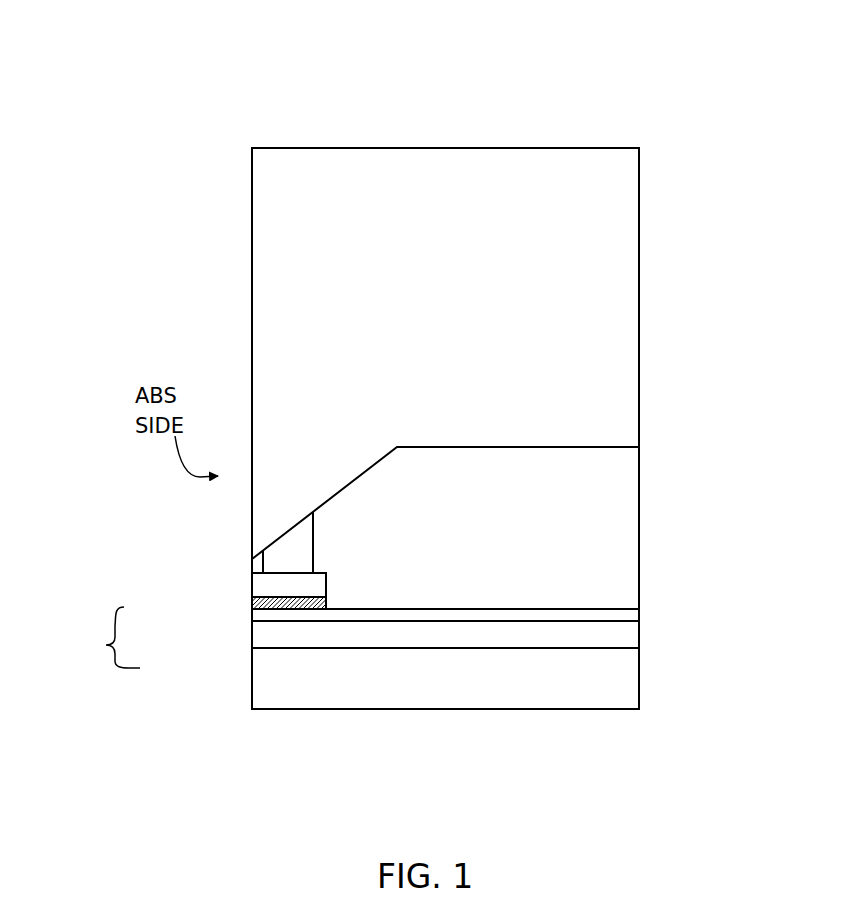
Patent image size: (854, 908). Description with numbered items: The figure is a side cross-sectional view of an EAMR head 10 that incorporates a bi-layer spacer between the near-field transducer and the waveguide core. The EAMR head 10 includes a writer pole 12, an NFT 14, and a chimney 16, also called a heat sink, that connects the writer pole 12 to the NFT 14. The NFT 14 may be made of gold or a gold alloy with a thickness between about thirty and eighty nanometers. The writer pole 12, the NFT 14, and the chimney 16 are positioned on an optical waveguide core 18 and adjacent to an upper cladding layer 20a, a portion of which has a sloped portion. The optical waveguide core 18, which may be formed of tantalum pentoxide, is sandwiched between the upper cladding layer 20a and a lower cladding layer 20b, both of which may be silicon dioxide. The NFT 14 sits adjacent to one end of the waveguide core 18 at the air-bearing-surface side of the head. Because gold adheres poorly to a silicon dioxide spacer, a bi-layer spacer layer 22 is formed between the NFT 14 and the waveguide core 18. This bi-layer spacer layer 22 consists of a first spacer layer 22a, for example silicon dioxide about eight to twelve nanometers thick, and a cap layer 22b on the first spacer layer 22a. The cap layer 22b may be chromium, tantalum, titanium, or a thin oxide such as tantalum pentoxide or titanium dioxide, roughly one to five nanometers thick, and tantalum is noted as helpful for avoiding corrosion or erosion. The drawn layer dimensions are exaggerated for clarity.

The EAMR head 10 is at (655, 94).
The writer pole 12 is at (639, 272).
The NFT 14 is at (252, 585).
The chimney 16 is at (313, 536).
The optical waveguide core 18 is at (639, 638).
The upper cladding layer 20a is at (639, 488).
The lower cladding layer 20b is at (639, 688).
The bi-layer spacer layer 22 is at (105, 637).
The first spacer layer 22a is at (252, 618).
The cap layer 22b is at (252, 603).